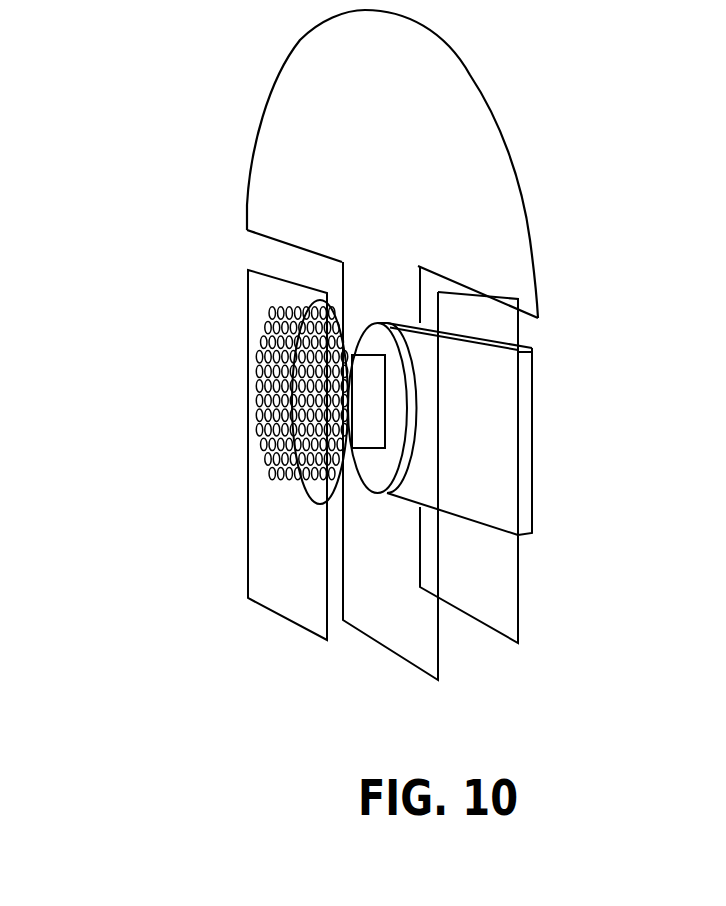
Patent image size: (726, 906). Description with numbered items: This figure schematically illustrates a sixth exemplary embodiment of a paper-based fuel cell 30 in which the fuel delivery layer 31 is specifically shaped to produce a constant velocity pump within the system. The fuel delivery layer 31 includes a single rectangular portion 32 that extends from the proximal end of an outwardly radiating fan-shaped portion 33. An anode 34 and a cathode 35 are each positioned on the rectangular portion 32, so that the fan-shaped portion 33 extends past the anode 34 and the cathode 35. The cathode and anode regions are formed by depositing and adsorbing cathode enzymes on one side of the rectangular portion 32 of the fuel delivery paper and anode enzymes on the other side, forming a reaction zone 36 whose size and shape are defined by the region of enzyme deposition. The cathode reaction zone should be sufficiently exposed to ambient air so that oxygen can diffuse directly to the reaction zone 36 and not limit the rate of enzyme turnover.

The fuel cell 30 is at (393, 377).
The fuel delivery layer 31 is at (502, 133).
The rectangular portion 32 is at (448, 657).
The fan-shaped portion 33 is at (452, 203).
The anode 34 is at (527, 446).
The cathode 35 is at (265, 377).
The reaction zone 36 is at (413, 377).